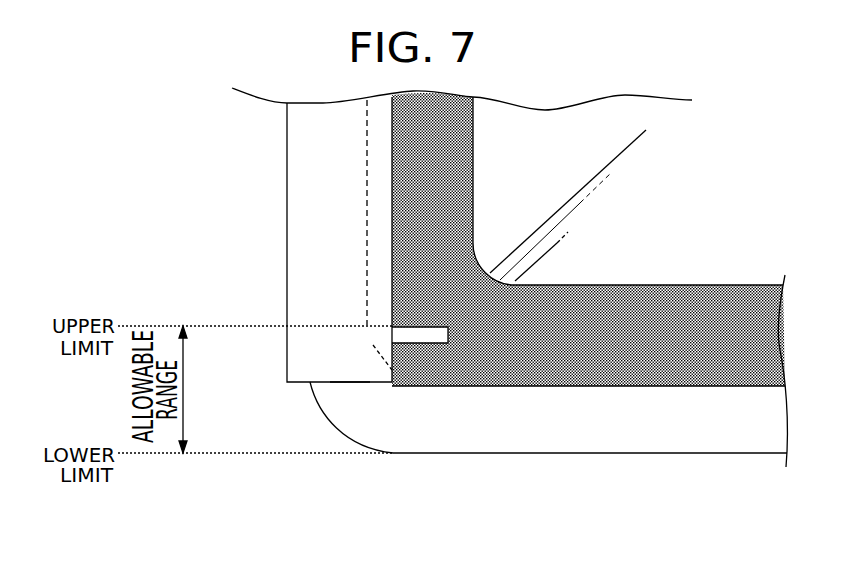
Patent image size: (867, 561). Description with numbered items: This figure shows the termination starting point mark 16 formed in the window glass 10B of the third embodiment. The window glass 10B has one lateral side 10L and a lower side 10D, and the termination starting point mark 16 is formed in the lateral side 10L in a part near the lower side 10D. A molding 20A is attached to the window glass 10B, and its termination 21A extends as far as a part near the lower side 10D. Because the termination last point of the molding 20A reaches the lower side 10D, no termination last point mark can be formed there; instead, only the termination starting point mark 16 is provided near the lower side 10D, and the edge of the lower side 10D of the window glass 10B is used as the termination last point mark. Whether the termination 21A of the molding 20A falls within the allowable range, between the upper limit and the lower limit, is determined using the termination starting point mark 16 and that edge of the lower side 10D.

The molding 20A is at (305, 170).
The termination 21A is at (348, 383).
The lateral side 10L is at (341, 428).
The termination starting point mark 16 is at (422, 337).
The window glass 10B is at (527, 425).
The lower side 10D is at (615, 453).